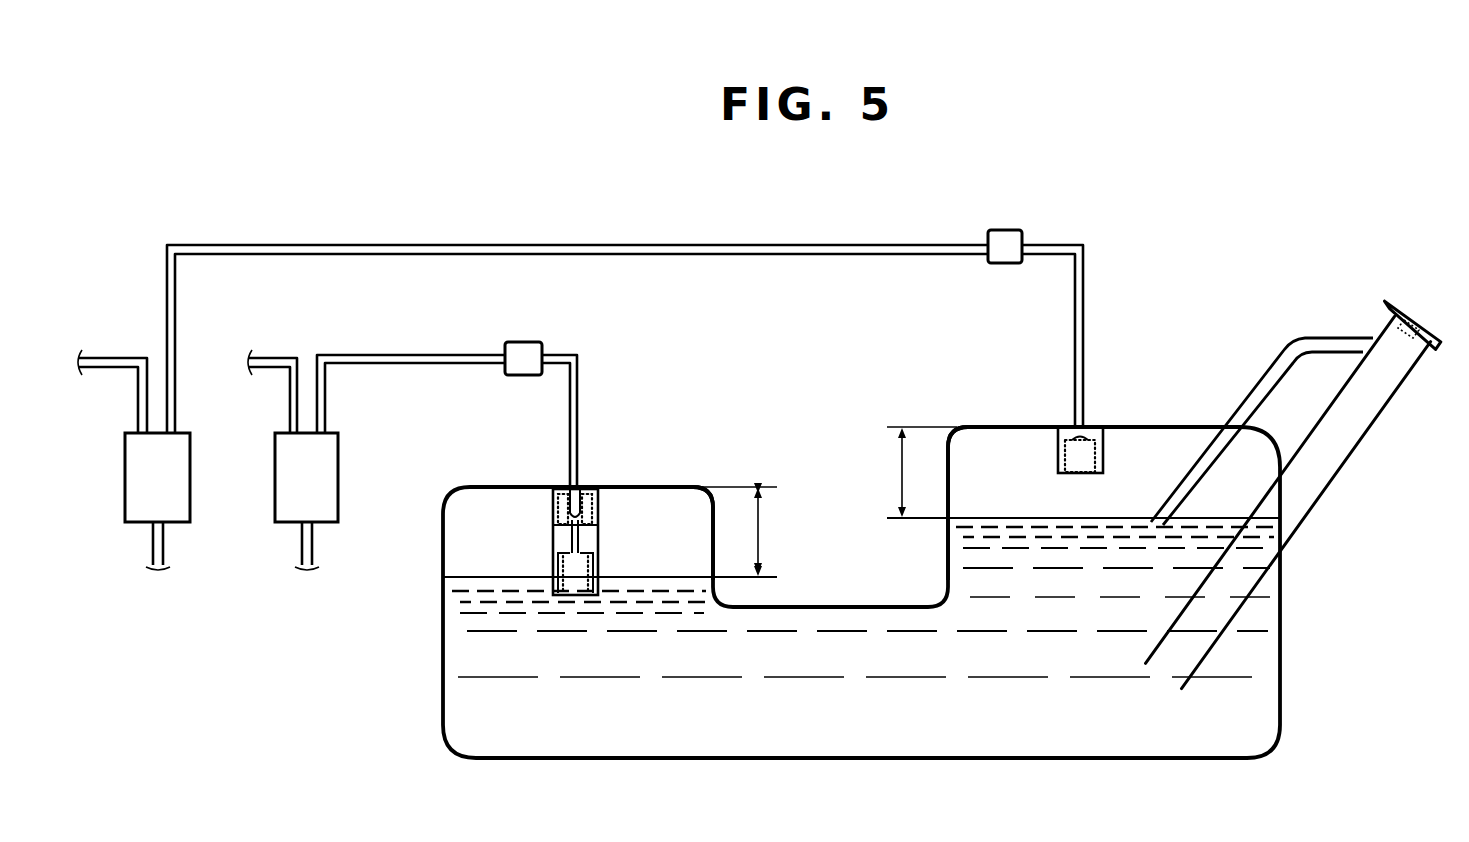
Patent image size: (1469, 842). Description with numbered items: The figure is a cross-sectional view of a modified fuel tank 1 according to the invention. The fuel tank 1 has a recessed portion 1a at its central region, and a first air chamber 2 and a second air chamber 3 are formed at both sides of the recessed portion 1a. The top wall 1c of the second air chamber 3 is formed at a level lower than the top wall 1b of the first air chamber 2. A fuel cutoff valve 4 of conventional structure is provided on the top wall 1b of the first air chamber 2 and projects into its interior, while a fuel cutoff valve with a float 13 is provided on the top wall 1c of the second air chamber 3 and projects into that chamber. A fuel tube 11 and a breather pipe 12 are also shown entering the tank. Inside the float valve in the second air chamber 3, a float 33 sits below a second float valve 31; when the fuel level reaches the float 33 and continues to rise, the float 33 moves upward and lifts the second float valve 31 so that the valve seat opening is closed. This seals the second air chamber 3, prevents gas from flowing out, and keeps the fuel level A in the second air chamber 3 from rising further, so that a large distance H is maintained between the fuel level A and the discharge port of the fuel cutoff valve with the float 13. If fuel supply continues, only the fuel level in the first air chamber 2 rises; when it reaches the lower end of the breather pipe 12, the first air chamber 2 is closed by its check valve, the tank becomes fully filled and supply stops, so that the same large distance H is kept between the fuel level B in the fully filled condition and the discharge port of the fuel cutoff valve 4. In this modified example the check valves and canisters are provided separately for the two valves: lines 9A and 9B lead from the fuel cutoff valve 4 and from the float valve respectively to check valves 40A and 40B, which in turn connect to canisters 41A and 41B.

The fuel tank 1 is at (443, 697).
The recessed portion 1a is at (855, 607).
The top wall of the first air chamber 1b is at (1188, 427).
The top wall of the second air chamber 1c is at (483, 487).
The first air chamber 2 is at (1013, 455).
The second air chamber 3 is at (668, 527).
The fuel cutoff valve 4 is at (1103, 462).
The pipe 9A is at (718, 243).
The pipe 9B is at (438, 355).
The fuel tube 11 is at (1336, 468).
The breather pipe 12 is at (1318, 338).
The float 13 is at (551, 512).
The second float valve 31 is at (594, 504).
The float 33 is at (553, 568).
The valve 40A is at (1005, 230).
The valve 40B is at (532, 342).
The canister 41A is at (190, 452).
The canister 41B is at (338, 456).
The distance H is at (827, 501).
The fuel level in the second air chamber A is at (645, 577).
The fuel level in the fully filled condition B is at (1005, 503).